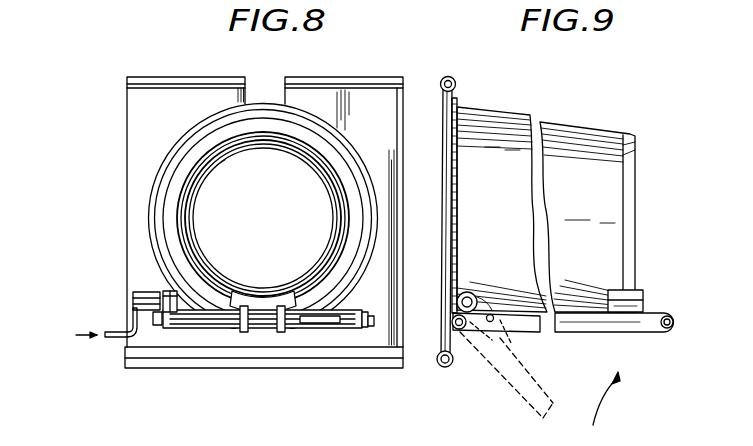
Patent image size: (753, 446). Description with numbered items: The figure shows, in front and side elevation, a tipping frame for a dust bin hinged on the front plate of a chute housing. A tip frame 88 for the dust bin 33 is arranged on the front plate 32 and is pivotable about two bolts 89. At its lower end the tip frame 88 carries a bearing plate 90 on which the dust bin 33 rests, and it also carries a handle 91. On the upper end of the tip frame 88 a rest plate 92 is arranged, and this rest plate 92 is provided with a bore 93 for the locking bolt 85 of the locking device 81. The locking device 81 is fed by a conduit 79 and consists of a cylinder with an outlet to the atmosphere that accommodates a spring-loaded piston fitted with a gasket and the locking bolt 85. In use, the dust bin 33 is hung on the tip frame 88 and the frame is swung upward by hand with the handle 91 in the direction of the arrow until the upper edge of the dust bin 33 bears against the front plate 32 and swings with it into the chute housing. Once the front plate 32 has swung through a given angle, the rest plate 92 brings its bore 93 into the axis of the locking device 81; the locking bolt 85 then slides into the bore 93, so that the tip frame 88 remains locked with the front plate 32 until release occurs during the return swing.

In FIG. 8, the front plate 32 is at (127, 126).
In FIG. 9, the front plate 32 is at (443, 166).
In FIG. 8, the dust bin 33 is at (165, 210).
In FIG. 9, the dust bin 33 is at (542, 124).
In FIG. 8, the conduit 79 is at (110, 332).
In FIG. 8, the locking device 81 is at (146, 292).
In FIG. 9, the locking device 81 is at (457, 300).
In FIG. 8, the locking bolt 85 is at (184, 318).
In FIG. 9, the tip frame 88 is at (597, 325).
In FIG. 8, the bolts 89 is at (156, 320).
In FIG. 9, the bolts 89 is at (452, 323).
In FIG. 8, the bearing plate 90 is at (258, 298).
In FIG. 9, the bearing plate 90 is at (638, 292).
In FIG. 8, the handle 91 is at (322, 326).
In FIG. 9, the handle 91 is at (669, 316).
In FIG. 9, the rest plate 92 is at (486, 308).
In FIG. 9, the bore 93 is at (510, 340).